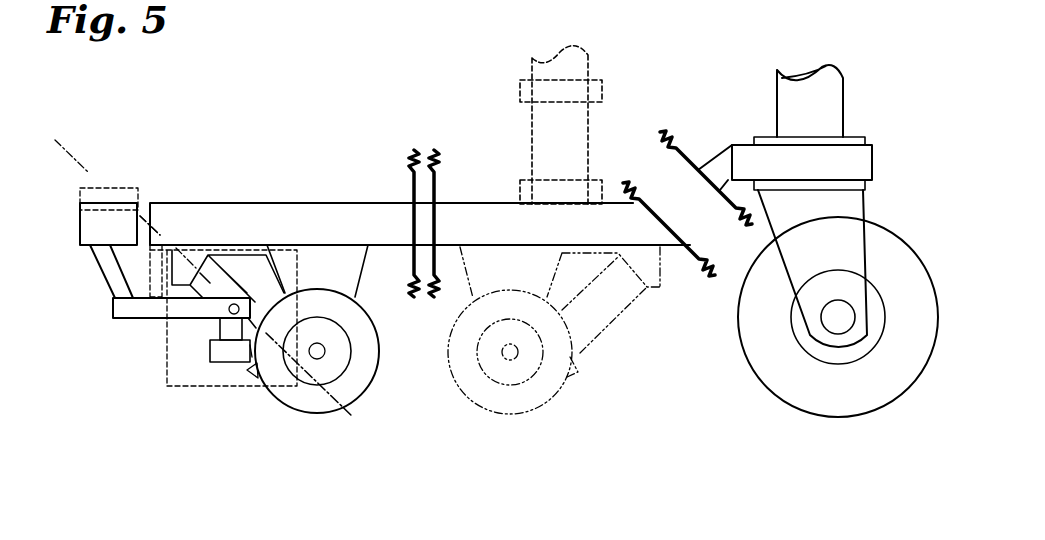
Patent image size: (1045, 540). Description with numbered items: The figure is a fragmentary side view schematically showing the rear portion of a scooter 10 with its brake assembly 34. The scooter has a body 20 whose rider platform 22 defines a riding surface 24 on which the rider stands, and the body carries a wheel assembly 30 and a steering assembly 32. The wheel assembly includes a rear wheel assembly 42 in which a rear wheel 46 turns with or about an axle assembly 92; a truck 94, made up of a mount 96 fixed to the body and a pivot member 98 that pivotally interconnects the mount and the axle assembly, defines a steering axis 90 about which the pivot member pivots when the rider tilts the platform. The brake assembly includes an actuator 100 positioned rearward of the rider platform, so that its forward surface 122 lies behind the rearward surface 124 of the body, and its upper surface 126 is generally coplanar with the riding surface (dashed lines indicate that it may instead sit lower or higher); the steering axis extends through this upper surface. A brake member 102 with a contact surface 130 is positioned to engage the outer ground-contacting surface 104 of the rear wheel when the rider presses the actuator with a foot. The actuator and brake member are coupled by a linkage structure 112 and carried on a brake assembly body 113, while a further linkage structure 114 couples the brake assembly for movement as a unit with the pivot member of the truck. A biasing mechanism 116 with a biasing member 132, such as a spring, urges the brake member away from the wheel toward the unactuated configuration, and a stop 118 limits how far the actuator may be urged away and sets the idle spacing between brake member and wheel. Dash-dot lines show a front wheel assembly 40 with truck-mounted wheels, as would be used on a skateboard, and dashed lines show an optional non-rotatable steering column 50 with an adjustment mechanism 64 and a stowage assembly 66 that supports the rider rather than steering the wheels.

The scooter 10 is at (667, 86).
The body 20 is at (496, 177).
The rider platform 22 is at (281, 201).
The riding surface 24 is at (478, 203).
The wheel assembly 30 is at (771, 411).
The steering assembly 32 is at (698, 227).
The brake assembly 34 is at (68, 263).
The front wheel assembly 40 is at (893, 227).
The rear wheel assembly 42 is at (356, 340).
The rear wheel 46 is at (339, 379).
The steering column 50 is at (849, 108).
The adjustment mechanism 64 is at (518, 90).
The stowage assembly 66 is at (598, 180).
The steering axis 90 is at (346, 421).
The axle assembly 92 is at (326, 353).
The truck 94 is at (385, 297).
The mount 96 is at (370, 263).
The pivot member 98 is at (237, 304).
The actuator 100 is at (79, 222).
The brake member 102 is at (215, 364).
The outer surface 104 is at (317, 414).
The linkage structure 112 is at (218, 325).
The brake assembly body 113 is at (95, 364).
The linkage structure 114 is at (202, 325).
The biasing mechanism 116 is at (231, 390).
The stop 118 is at (150, 281).
The forward surface 122 is at (145, 235).
The rearward surface 124 is at (146, 217).
The upper surface 126 is at (100, 203).
The contact surface 130 is at (253, 358).
The biasing member 132 is at (307, 270).